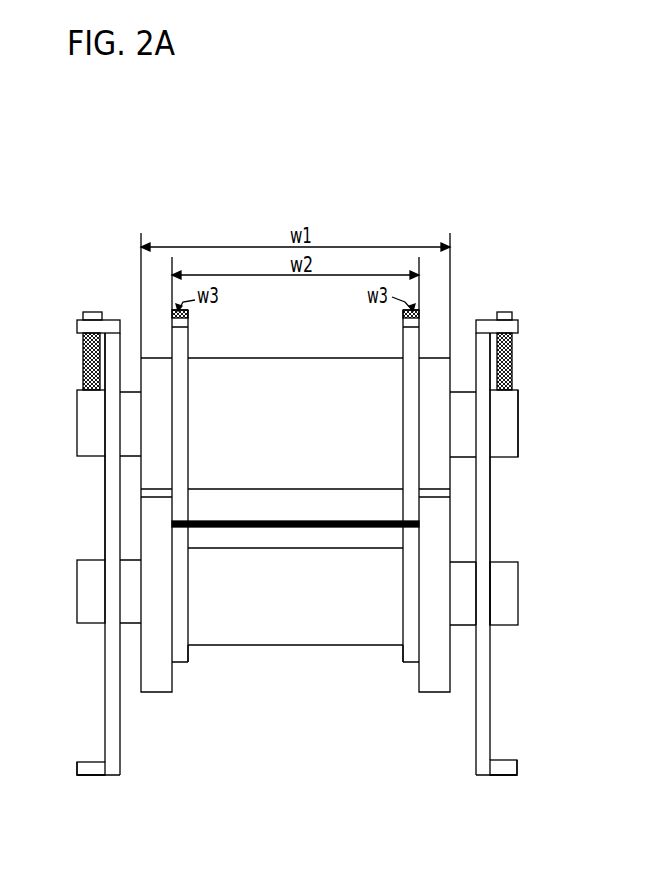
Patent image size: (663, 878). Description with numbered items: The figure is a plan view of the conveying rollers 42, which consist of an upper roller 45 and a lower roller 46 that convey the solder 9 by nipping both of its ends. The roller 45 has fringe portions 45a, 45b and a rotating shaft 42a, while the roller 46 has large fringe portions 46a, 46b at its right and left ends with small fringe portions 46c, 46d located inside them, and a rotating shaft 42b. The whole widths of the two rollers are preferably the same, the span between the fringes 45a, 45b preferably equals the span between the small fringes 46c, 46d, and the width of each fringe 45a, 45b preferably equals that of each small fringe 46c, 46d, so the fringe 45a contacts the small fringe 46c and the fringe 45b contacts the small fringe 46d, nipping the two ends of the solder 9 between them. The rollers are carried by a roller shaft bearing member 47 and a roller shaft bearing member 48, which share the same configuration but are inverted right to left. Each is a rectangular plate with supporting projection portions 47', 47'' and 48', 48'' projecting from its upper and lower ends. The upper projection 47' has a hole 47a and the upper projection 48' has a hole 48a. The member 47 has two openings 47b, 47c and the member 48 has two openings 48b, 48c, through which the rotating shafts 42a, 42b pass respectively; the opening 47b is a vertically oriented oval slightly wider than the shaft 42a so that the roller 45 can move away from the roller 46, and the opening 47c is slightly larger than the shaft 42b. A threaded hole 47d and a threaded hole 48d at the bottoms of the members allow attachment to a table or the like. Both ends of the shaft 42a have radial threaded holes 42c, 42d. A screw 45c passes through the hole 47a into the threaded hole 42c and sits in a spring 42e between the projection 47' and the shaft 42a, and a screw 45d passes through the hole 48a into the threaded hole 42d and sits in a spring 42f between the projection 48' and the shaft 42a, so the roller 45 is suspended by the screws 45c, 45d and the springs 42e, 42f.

The conveying rollers 42 is at (88, 255).
The rotating shaft 42a is at (519, 450).
The rotating shaft 42b is at (505, 625).
The threaded hole 42c is at (82, 391).
The threaded hole 42d is at (514, 392).
The spring 42e is at (83, 380).
The spring 42f is at (509, 378).
The roller 45 is at (340, 358).
The fringe portion 45a is at (187, 462).
The fringe portion 45b is at (404, 462).
The screw 45c is at (90, 312).
The screw 45d is at (500, 312).
The roller 46 is at (338, 646).
The large fringe portion 46a is at (157, 694).
The large fringe portion 46b is at (426, 694).
The small fringe portion 46c is at (190, 653).
The small fringe portion 46d is at (402, 653).
The roller shaft bearing member 47 is at (91, 542).
The supporting projection portion 47' is at (119, 323).
The supporting projection portion 47'' is at (71, 794).
The hole 47a is at (83, 318).
The opening 47b is at (103, 460).
The opening 47c is at (104, 628).
The threaded hole 47d is at (92, 755).
The roller shaft bearing member 48 is at (513, 542).
The supporting projection portion 48' is at (483, 325).
The supporting projection portion 48'' is at (516, 793).
The hole 48a is at (503, 316).
The opening 48b is at (490, 462).
The opening 48c is at (478, 628).
The threaded hole 48d is at (536, 746).
The solder 9 is at (343, 522).